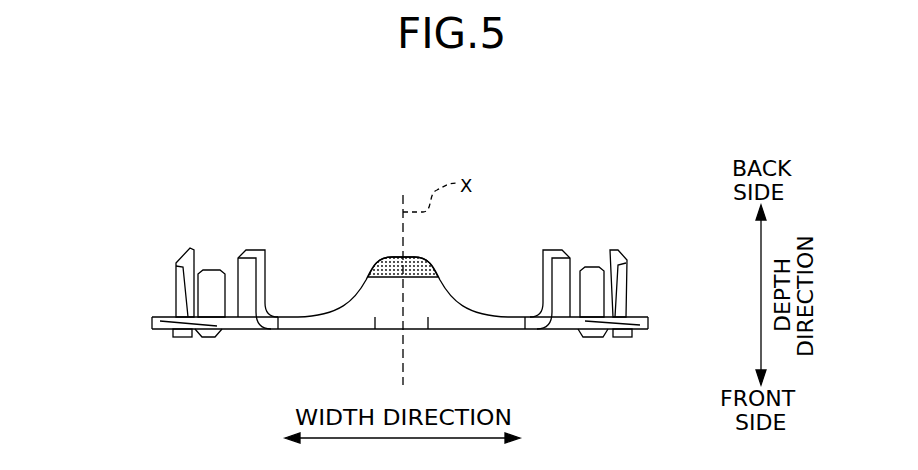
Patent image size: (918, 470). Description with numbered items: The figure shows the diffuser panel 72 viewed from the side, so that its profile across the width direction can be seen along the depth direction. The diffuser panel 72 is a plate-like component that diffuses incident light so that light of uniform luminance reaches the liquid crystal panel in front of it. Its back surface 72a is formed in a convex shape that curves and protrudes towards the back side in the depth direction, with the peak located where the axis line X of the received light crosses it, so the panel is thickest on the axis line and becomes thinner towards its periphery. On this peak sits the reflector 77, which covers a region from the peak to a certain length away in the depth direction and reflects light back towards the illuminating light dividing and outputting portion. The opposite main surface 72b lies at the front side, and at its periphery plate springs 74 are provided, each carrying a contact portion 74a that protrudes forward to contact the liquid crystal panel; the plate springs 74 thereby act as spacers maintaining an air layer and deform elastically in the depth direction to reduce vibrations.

The diffuser panel 72 is at (190, 145).
The back surface 72a is at (463, 312).
The main surface 72b is at (480, 329).
The plate spring 74 is at (167, 330).
The contact portion 74a is at (208, 332).
The reflector 77 is at (428, 268).